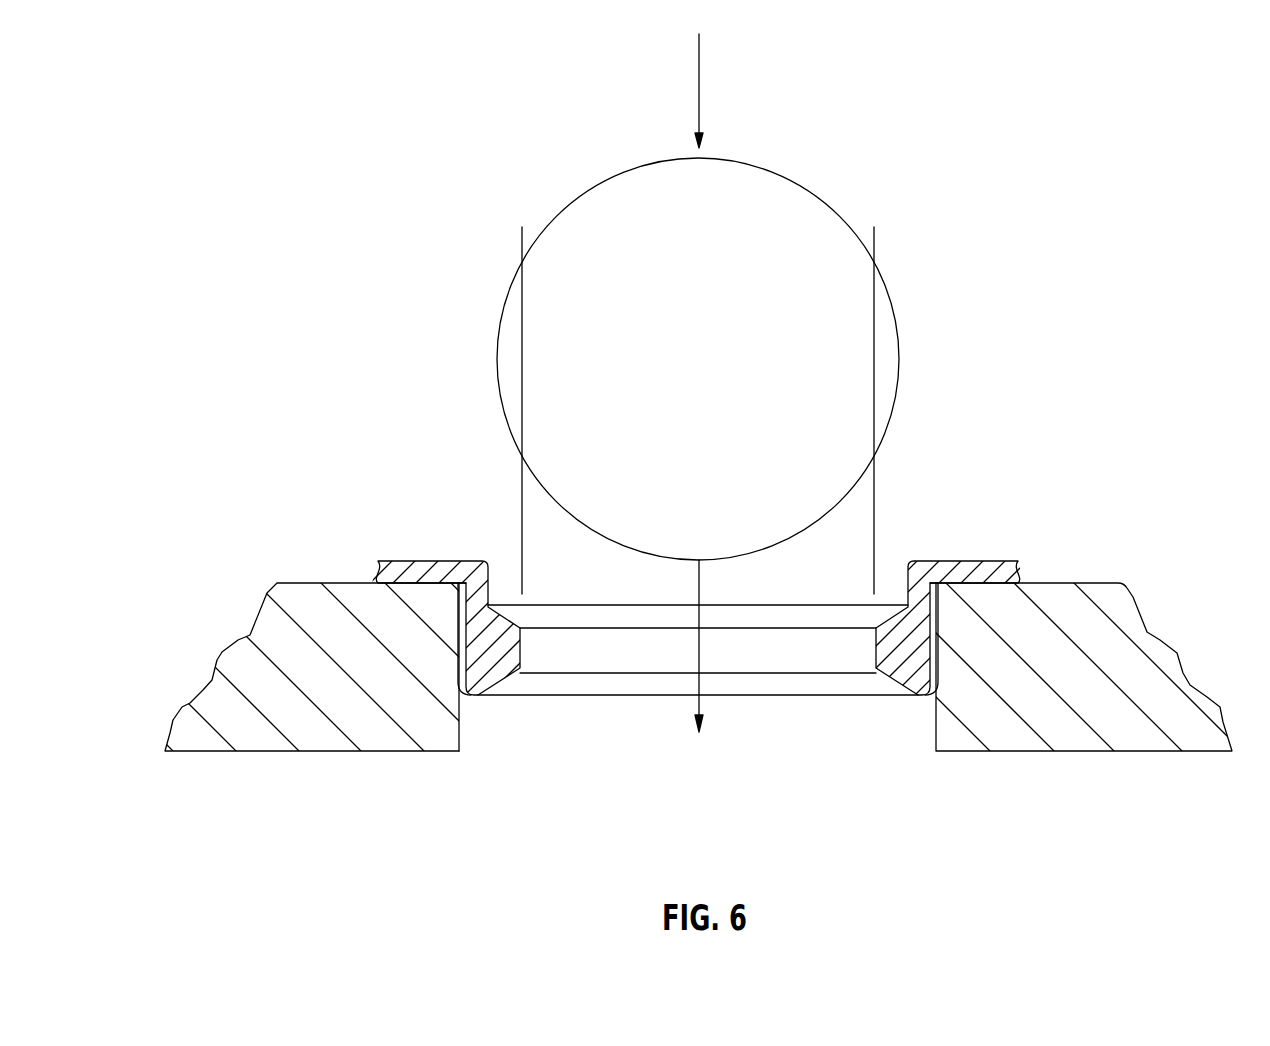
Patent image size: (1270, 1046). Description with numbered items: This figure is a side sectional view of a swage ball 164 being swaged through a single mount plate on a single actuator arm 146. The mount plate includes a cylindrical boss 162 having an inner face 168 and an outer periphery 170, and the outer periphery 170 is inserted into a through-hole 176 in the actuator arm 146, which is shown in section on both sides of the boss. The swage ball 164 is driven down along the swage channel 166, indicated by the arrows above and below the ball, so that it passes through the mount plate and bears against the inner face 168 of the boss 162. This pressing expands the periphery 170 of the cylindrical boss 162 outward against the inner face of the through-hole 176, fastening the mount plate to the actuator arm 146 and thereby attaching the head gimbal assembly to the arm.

The actuator arm 146 is at (253, 727).
The cylindrical boss 162 is at (966, 566).
The swage ball 164 is at (797, 258).
The swage channel 166 is at (700, 80).
The inner face 168 is at (520, 660).
The outer periphery 170 is at (462, 692).
The through-hole 176 is at (460, 751).